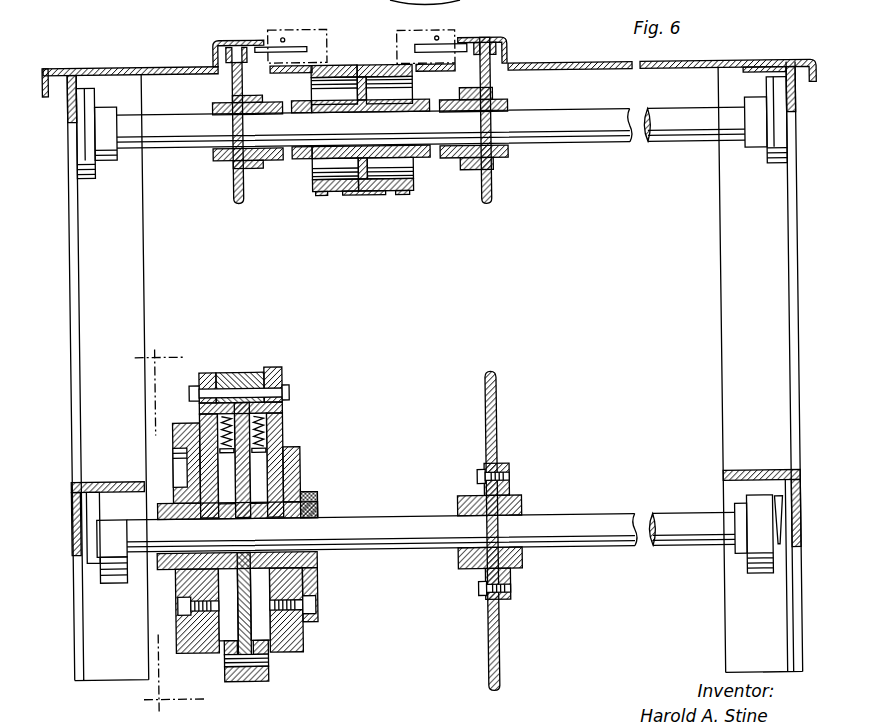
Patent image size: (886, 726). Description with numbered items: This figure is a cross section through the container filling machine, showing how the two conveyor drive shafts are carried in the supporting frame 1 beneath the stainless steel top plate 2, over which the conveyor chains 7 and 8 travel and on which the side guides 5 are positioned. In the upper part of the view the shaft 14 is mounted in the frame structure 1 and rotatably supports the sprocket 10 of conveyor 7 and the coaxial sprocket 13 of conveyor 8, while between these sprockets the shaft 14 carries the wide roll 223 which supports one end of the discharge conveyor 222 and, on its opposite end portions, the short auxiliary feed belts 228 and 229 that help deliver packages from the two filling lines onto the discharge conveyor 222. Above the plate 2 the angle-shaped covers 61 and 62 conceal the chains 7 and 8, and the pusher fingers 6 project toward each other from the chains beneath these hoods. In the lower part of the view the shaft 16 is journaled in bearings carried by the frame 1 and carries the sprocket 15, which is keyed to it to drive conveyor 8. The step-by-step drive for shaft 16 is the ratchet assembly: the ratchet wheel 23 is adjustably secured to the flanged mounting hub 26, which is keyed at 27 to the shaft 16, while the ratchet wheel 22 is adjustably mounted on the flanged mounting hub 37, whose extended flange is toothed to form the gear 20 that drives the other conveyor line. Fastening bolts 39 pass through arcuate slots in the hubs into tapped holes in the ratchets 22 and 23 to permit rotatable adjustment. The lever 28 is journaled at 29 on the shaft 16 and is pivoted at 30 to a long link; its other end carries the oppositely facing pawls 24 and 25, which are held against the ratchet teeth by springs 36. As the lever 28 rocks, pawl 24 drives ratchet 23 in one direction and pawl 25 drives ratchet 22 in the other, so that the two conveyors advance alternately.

The supporting frame 1 is at (70, 432).
The top plate 2 is at (611, 62).
The side guides 5 is at (169, 531).
The pusher fingers 6 is at (424, 47).
The conveyor chain 7 is at (230, 49).
The conveyor chain 8 is at (514, 44).
The sprocket 10 is at (236, 194).
The sprocket 13 is at (497, 191).
The shaft 14 is at (575, 142).
The sprocket 15 is at (494, 385).
The shaft 16 is at (551, 518).
The gear 20 is at (192, 647).
The ratchet wheel 22 is at (204, 417).
The ratchet wheel 23 is at (284, 438).
The pawl 24 is at (285, 370).
The pawl 25 is at (210, 369).
The flanged mounting hub 26 is at (298, 495).
The key 27 is at (298, 516).
The lever 28 is at (246, 468).
The journal 29 is at (236, 558).
The pivot 30 is at (266, 663).
The spring 36 is at (257, 434).
The flanged mounting hub 37 is at (179, 493).
The fastening bolts 39 is at (310, 604).
The angle-shaped cover 61 is at (226, 37).
The angle-shaped cover 62 is at (489, 37).
The discharge conveyor 222 is at (364, 193).
The wide roll 223 is at (376, 193).
The auxiliary feed belt 228 is at (412, 194).
The auxiliary feed belt 229 is at (325, 189).